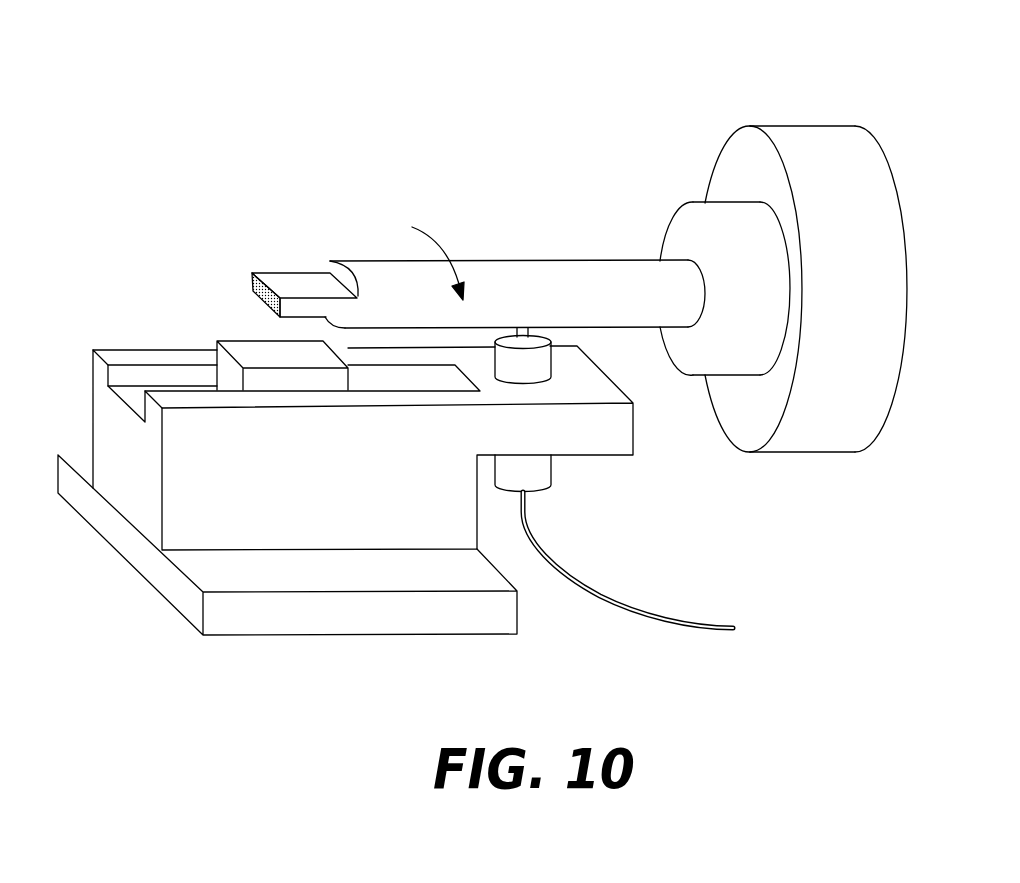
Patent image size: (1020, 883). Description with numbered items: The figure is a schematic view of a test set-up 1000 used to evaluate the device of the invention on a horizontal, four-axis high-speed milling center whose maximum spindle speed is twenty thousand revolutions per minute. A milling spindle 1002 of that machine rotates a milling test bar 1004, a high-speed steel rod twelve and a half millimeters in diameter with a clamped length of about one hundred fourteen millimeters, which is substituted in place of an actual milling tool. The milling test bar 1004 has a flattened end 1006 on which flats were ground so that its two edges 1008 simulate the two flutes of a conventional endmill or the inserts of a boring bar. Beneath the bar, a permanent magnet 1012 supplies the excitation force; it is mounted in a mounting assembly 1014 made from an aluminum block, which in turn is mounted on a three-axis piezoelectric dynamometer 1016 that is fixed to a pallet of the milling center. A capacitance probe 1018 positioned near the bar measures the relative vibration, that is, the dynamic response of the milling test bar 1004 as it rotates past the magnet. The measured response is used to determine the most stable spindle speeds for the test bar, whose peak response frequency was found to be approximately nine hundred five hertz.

The test set-up 1000 is at (715, 88).
The milling spindle 1002 is at (857, 408).
The milling test bar 1004 is at (503, 275).
The flattened end 1006 is at (300, 285).
The edges 1008 is at (272, 322).
The permanent magnet 1012 is at (265, 370).
The mounting assembly 1014 is at (393, 397).
The 3-axis piezoelectric dynamometer 1016 is at (300, 497).
The capacitance probe 1018 is at (515, 358).